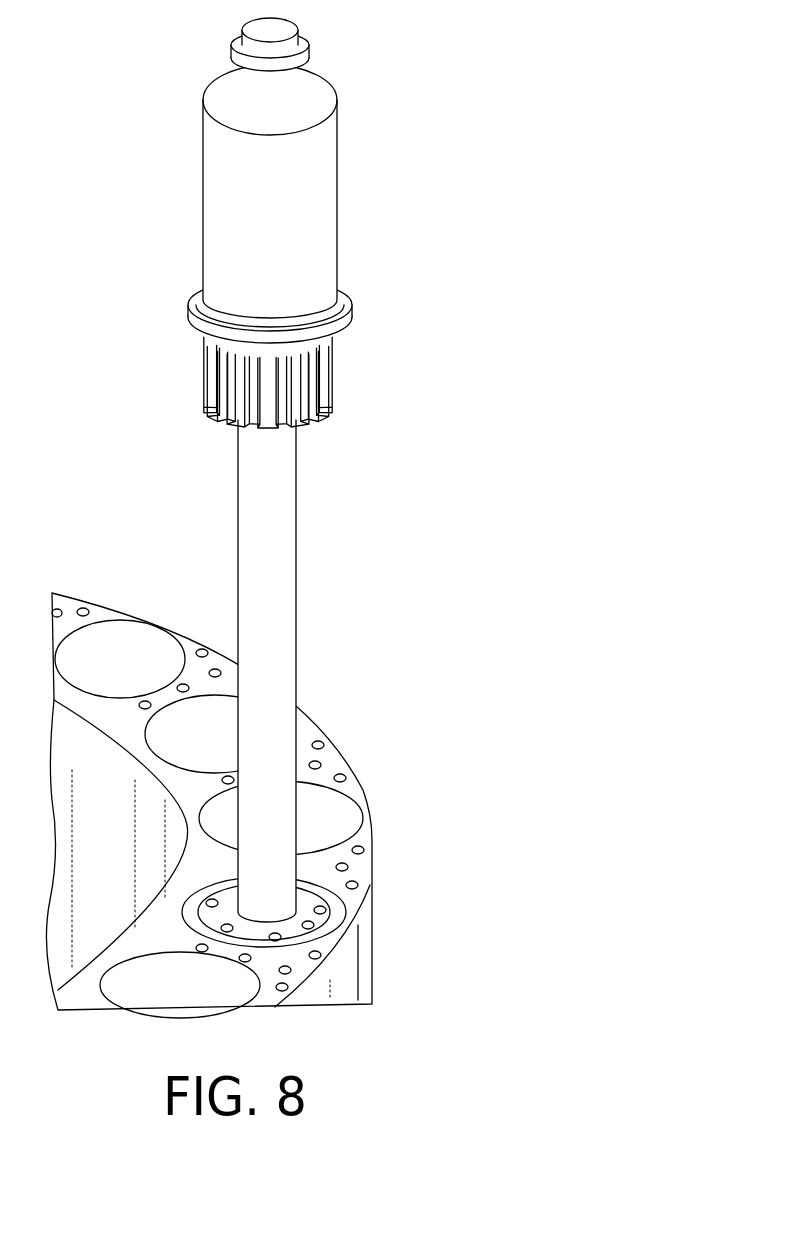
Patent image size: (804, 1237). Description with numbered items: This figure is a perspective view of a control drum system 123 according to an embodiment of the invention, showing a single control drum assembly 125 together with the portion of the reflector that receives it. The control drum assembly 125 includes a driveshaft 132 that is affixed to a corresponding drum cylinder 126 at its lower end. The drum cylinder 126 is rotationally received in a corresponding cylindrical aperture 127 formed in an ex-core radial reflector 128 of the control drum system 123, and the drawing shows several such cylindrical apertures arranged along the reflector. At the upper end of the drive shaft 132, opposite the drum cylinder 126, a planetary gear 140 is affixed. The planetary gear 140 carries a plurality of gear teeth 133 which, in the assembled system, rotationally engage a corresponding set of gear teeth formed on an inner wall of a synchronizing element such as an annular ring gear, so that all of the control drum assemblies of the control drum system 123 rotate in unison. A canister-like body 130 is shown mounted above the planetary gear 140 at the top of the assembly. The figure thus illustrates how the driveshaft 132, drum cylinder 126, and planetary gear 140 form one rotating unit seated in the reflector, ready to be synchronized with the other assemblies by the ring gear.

The control drum system 123 is at (307, 470).
The control drum assembly 125 is at (384, 671).
The drum cylinder 126 is at (300, 897).
The cylindrical aperture 127 is at (350, 810).
The ex-core radial reflector 128 is at (281, 725).
The motor canister 130 is at (308, 172).
The driveshaft 132 is at (298, 622).
The gear teeth 133 is at (205, 368).
The planetary gear 140 is at (342, 406).